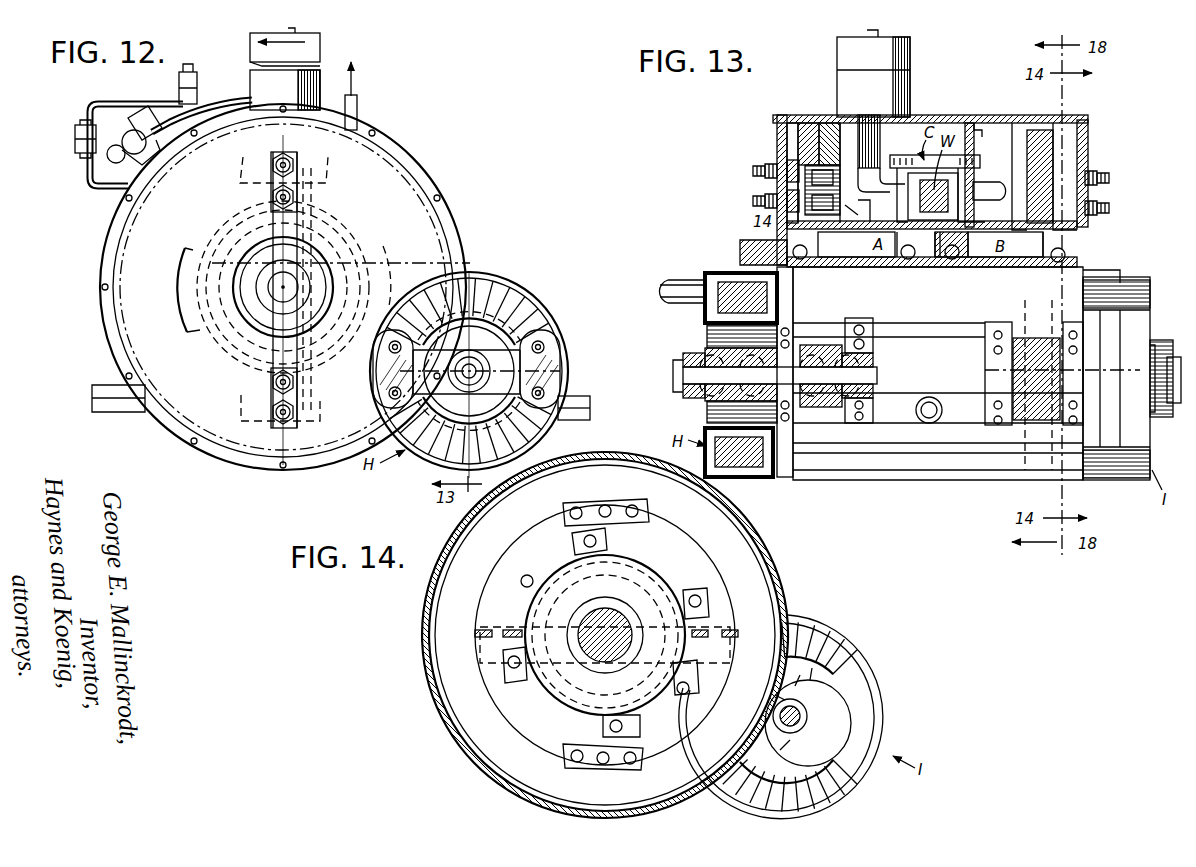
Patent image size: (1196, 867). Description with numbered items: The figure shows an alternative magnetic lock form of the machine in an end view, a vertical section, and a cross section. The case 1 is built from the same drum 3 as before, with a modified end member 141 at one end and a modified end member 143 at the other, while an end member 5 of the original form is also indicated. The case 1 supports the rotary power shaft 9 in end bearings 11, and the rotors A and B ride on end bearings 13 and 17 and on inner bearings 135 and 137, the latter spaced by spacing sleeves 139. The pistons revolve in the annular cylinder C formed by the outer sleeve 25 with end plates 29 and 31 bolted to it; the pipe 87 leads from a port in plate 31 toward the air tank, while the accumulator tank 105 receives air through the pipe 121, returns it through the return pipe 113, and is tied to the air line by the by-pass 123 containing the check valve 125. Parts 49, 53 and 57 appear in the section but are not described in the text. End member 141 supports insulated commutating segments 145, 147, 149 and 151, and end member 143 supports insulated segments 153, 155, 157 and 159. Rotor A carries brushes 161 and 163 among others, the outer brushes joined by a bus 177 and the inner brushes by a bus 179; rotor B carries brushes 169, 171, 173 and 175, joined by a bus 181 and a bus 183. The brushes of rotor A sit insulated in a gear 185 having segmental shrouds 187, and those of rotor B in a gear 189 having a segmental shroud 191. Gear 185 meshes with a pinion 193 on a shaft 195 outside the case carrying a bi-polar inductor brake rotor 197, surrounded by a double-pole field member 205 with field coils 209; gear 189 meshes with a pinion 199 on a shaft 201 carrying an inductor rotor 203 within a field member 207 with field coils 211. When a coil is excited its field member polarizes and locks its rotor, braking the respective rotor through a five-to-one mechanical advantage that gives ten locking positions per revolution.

In FIG. 12, the case 1 is at (112, 226).
In FIG. 13, the case 1 is at (962, 100).
In FIG. 12, the drum 3 is at (403, 158).
In FIG. 13, the drum 3 is at (968, 115).
In FIG. 14, the drum 3 is at (757, 536).
In FIG. 12, the end member 5 is at (138, 300).
In FIG. 12, the rotary power shaft 9 is at (283, 287).
In FIG. 13, the rotary power shaft 9 is at (668, 291).
In FIG. 14, the rotary power shaft 9 is at (605, 614).
In FIG. 12, the end bearing 11 is at (267, 262).
In FIG. 13, the end bearing 11 is at (770, 238).
In FIG. 13, the bearing 13 is at (802, 260).
In FIG. 13, the bearing 17 is at (1055, 265).
In FIG. 13, the outer sleeve 25 is at (935, 153).
In FIG. 13, the end plate 29 is at (865, 216).
In FIG. 13, the end plate 31 is at (962, 216).
In FIG. 13, the post 49 is at (976, 150).
In FIG. 13, the pin 53 is at (989, 179).
In FIG. 13, the spacer 57 is at (963, 244).
In FIG. 12, the pipe 87 is at (358, 118).
In FIG. 12, the accumulator tank 105 is at (262, 80).
In FIG. 13, the accumulator tank 105 is at (903, 82).
In FIG. 12, the return pipe 113 is at (138, 143).
In FIG. 13, the pipe 121 is at (880, 148).
In FIG. 12, the by-pass 123 is at (118, 102).
In FIG. 12, the check valve 125 is at (77, 140).
In FIG. 13, the inner bearing 135 is at (950, 260).
In FIG. 13, the inner bearing 137 is at (958, 265).
In FIG. 13, the spacing sleeve 139 is at (905, 260).
In FIG. 12, the end member 141 is at (400, 190).
In FIG. 13, the end member 141 is at (790, 135).
In FIG. 13, the end member 143 is at (1087, 142).
In FIG. 14, the end member 143 is at (757, 588).
In FIG. 12, the insulated commutating segment 145 is at (243, 176).
In FIG. 13, the insulated commutating segment 145 is at (800, 152).
In FIG. 12, the insulated commutating segment 147 is at (195, 245).
In FIG. 13, the insulated commutating segment 147 is at (778, 187).
In FIG. 12, the insulated commutating segment 149 is at (245, 418).
In FIG. 12, the insulated commutating segment 151 is at (378, 247).
In FIG. 13, the insulated segment 153 is at (1087, 170).
In FIG. 14, the insulated segment 153 is at (630, 516).
In FIG. 13, the insulated segment 155 is at (1082, 221).
In FIG. 14, the insulated segment 155 is at (535, 577).
In FIG. 14, the insulated segment 157 is at (590, 750).
In FIG. 14, the insulated segment 159 is at (652, 718).
In FIG. 13, the brush 161 is at (753, 170).
In FIG. 13, the brush 163 is at (753, 202).
In FIG. 14, the brush 169 is at (478, 630).
In FIG. 14, the brush 171 is at (505, 630).
In FIG. 14, the brush 173 is at (705, 622).
In FIG. 14, the brush 175 is at (738, 633).
In FIG. 12, the bus 177 is at (312, 200).
In FIG. 12, the bus 179 is at (314, 222).
In FIG. 13, the bus 179 is at (932, 244).
In FIG. 14, the bus 181 is at (537, 683).
In FIG. 14, the bus 183 is at (605, 635).
In FIG. 12, the gear 185 is at (341, 248).
In FIG. 13, the gear 185 is at (780, 118).
In FIG. 13, the segmental shroud 187 is at (835, 120).
In FIG. 13, the gear 189 is at (1038, 128).
In FIG. 13, the segmental shroud 191 is at (1090, 305).
In FIG. 12, the pinion 193 is at (520, 300).
In FIG. 13, the pinion 193 is at (835, 420).
In FIG. 12, the shaft 195 is at (518, 330).
In FIG. 13, the shaft 195 is at (877, 380).
In FIG. 12, the bi-polar magnetic inductor brake rotor 197 is at (184, 40).
In FIG. 13, the bi-polar magnetic inductor brake rotor 197 is at (700, 400).
In FIG. 13, the pinion 199 is at (1020, 415).
In FIG. 13, the shaft 201 is at (1098, 370).
In FIG. 14, the shaft 201 is at (805, 713).
In FIG. 14, the bi-polar magnetic inductor brake rotor 203 is at (835, 725).
In FIG. 12, the double-pole magnetic field member 205 is at (537, 308).
In FIG. 13, the double-pole magnetic field member 205 is at (715, 308).
In FIG. 13, the double-pole magnetic field member 207 is at (1145, 470).
In FIG. 14, the double-pole magnetic field member 207 is at (855, 664).
In FIG. 12, the field coil 209 is at (480, 286).
In FIG. 13, the field coil 209 is at (720, 278).
In FIG. 13, the field coil 211 is at (1085, 487).
In FIG. 14, the field coil 211 is at (805, 622).